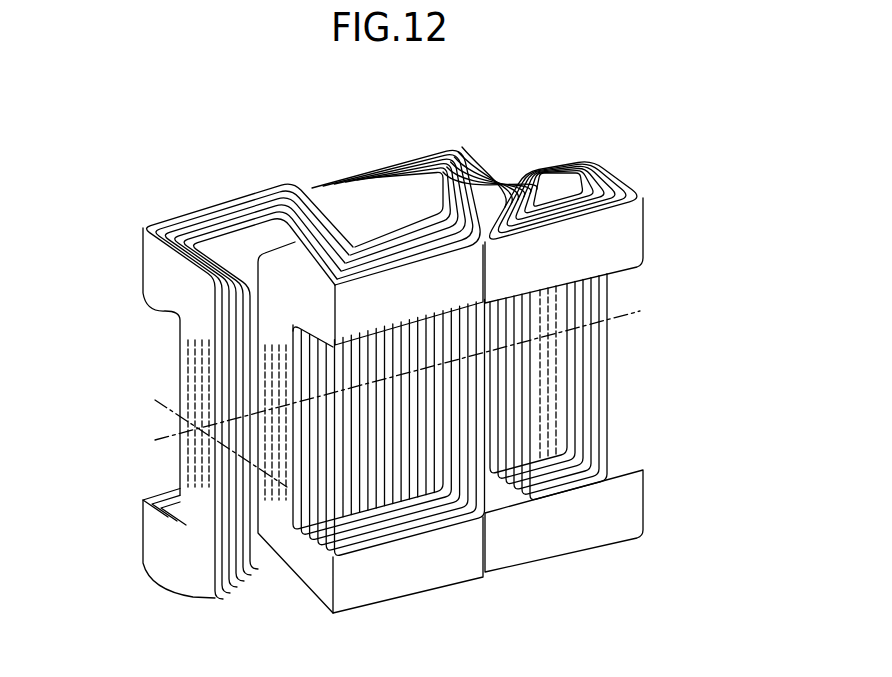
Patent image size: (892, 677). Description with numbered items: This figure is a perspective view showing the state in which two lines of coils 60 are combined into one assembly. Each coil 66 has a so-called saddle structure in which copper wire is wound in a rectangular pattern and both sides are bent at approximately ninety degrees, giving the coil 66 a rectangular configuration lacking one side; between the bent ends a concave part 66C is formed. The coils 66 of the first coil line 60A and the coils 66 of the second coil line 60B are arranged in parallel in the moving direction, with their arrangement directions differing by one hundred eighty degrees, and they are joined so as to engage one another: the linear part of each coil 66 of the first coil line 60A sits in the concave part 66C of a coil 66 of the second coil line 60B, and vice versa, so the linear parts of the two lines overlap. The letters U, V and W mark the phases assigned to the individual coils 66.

The coil lines 60 is at (597, 100).
The first coil line 60A is at (511, 165).
The second coil line 60B is at (622, 175).
The coil 66 is at (432, 160).
The concave part 66C is at (398, 190).
The U-phase coil U is at (278, 268).
The V-phase coil V is at (293, 187).
The W-phase coil W is at (336, 180).